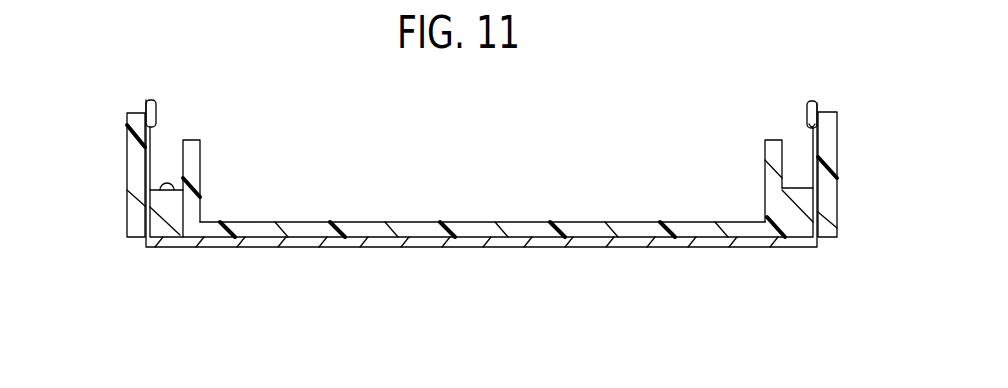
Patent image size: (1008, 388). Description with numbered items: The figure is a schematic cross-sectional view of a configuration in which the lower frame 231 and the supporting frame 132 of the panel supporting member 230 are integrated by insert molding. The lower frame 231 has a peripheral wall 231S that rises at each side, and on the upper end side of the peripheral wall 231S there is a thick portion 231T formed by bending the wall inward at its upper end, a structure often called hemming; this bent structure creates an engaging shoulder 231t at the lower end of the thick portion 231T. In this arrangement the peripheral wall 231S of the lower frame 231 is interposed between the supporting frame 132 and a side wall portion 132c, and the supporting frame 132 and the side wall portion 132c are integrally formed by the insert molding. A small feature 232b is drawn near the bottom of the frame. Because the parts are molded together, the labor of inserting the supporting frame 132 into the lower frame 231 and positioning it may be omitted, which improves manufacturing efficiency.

The panel supporting member 230 is at (573, 252).
The lower frame 231 is at (332, 250).
The peripheral wall 231S is at (150, 147).
The thick portion 231T is at (149, 100).
The engaging shoulder 231t is at (808, 126).
The side wall portion 132c is at (128, 148).
The supporting frame 132 is at (478, 230).
The protrusion 232b is at (166, 183).